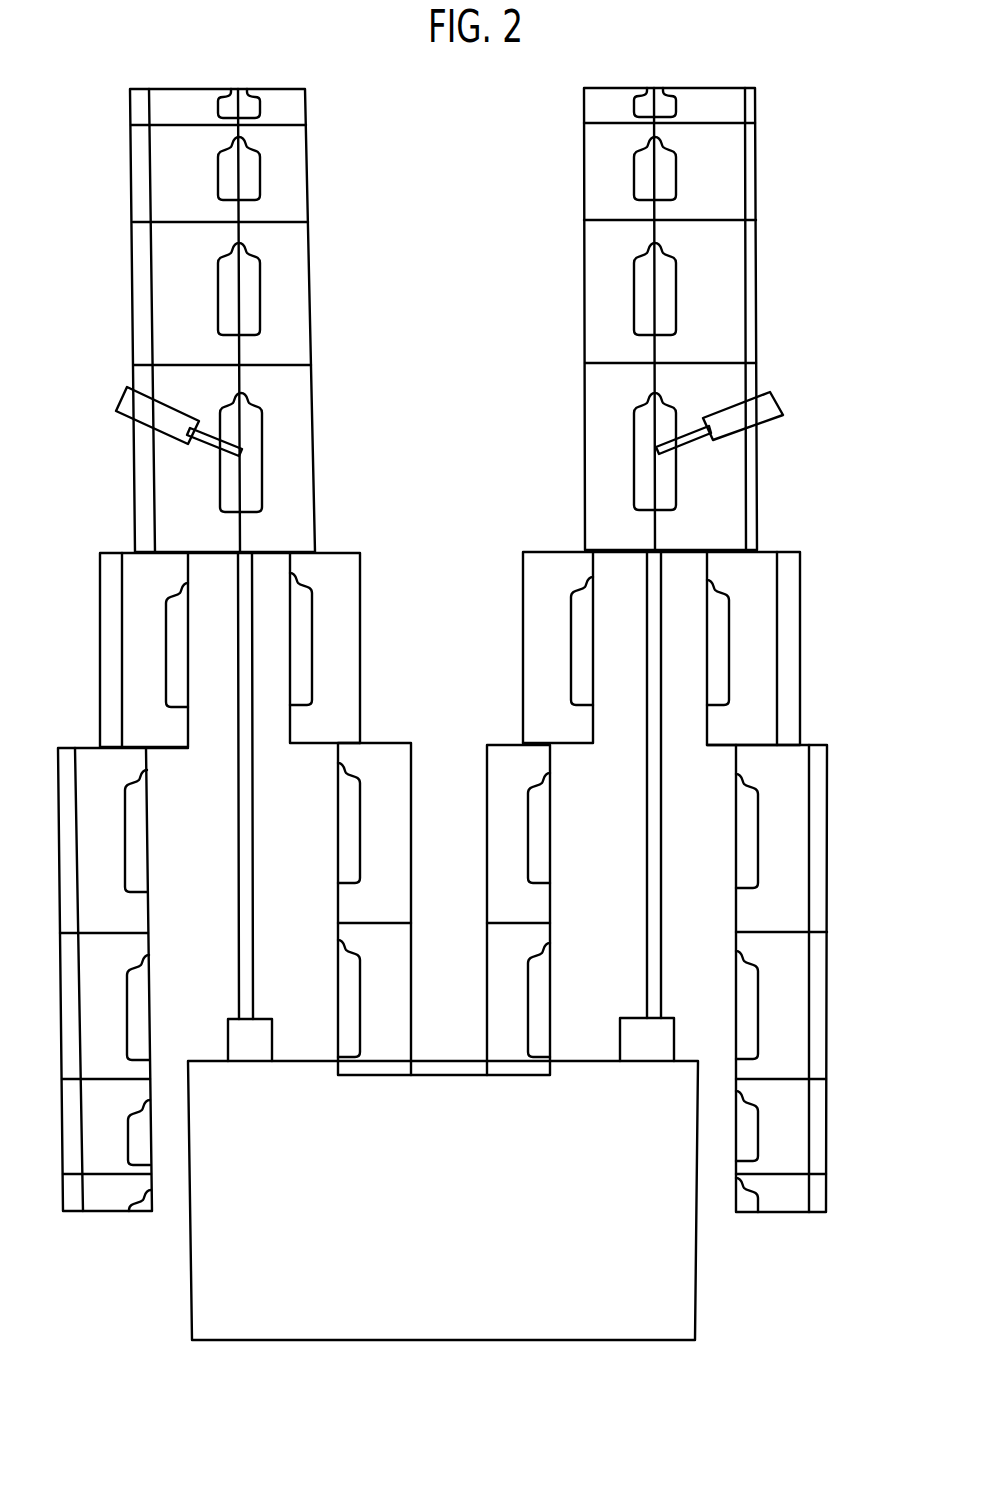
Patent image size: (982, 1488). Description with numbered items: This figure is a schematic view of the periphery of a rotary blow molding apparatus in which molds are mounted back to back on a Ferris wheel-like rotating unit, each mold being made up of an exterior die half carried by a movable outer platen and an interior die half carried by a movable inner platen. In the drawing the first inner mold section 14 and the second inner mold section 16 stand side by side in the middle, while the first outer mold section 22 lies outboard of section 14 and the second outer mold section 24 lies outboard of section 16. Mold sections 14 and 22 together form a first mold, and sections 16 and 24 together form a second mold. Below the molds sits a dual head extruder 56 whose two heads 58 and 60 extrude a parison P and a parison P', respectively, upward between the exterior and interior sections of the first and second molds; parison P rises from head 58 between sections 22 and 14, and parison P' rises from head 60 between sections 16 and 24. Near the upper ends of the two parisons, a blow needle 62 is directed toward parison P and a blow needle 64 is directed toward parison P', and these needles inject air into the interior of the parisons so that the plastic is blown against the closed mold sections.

The first inner mold section 14 is at (388, 748).
The second inner mold section 16 is at (505, 745).
The first outer mold section 22 is at (88, 754).
The second outer mold section 24 is at (805, 755).
The dual head extruder 56 is at (463, 1242).
The extruder head 58 is at (248, 1040).
The extruder head 60 is at (642, 1040).
The blow needle 62 is at (129, 398).
The blow needle 64 is at (773, 398).
The parison P is at (221, 786).
The parison P' is at (626, 785).